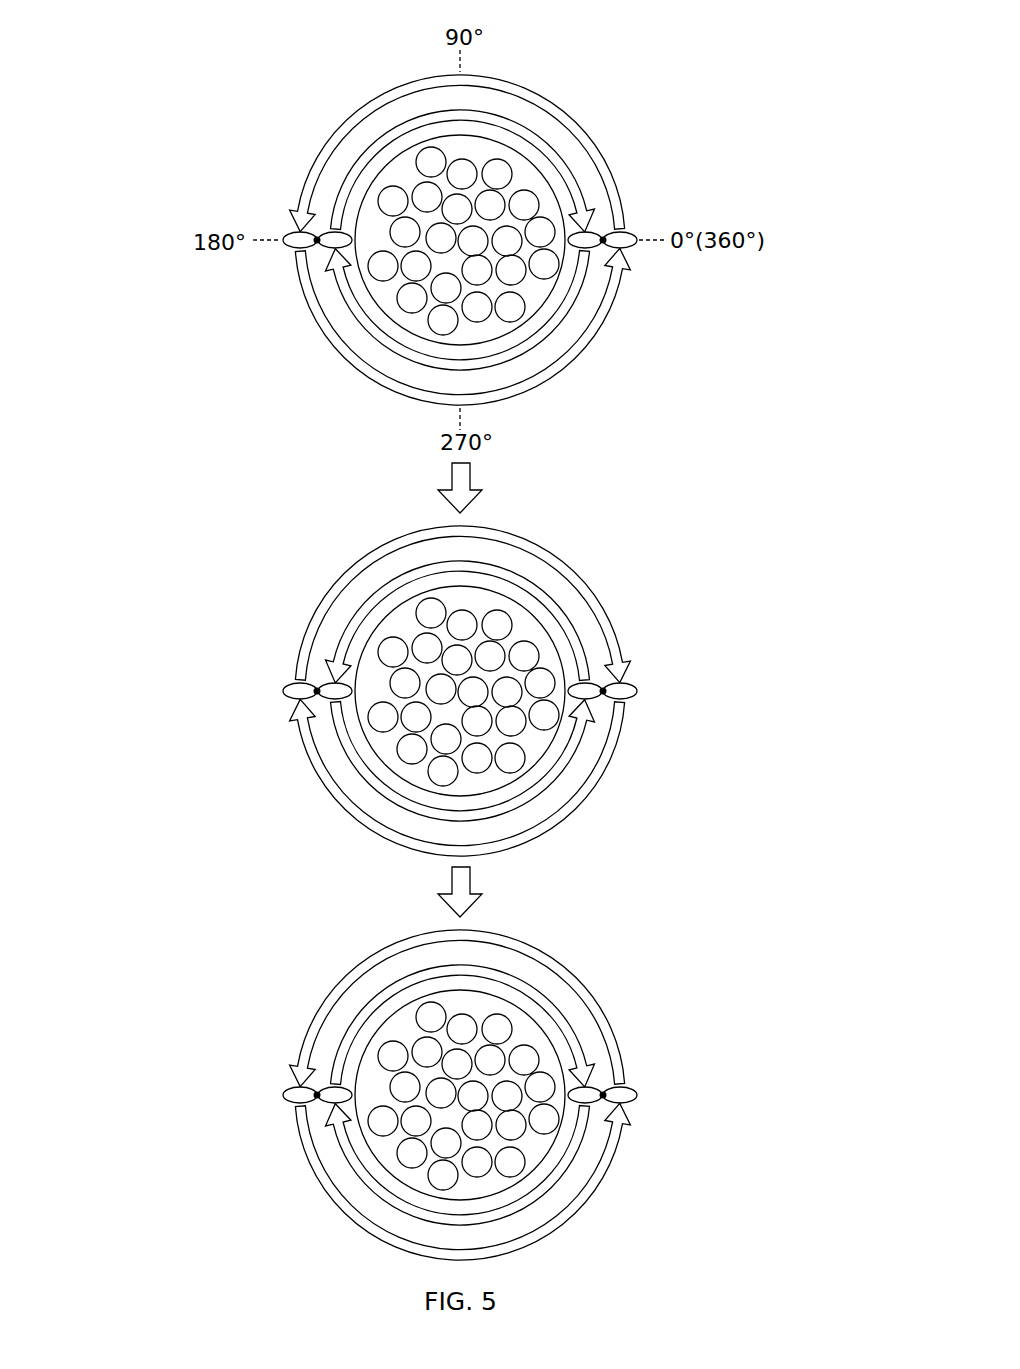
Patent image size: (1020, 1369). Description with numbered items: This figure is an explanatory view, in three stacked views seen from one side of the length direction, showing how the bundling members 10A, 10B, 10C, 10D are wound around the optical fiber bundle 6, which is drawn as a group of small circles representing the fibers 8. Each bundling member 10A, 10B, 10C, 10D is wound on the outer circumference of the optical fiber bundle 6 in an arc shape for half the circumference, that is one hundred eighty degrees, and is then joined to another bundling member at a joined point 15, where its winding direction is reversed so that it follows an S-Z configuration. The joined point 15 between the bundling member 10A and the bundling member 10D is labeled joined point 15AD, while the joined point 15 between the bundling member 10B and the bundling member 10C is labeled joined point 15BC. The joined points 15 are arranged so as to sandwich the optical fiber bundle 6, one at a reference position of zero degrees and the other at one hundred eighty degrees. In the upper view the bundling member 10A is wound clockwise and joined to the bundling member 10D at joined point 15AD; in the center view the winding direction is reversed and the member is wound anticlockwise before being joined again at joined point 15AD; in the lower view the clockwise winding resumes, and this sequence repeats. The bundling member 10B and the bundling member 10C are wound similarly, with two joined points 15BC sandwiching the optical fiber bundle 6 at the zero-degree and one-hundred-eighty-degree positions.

The optical fiber bundle 6 is at (516, 635).
The electric wire 8 is at (547, 230).
The bundling member 10A is at (612, 276).
The bundling member 10B is at (293, 235).
The bundling member 10C is at (333, 270).
The bundling member 10D is at (632, 233).
The joined point 15 is at (461, 686).
The joined point 15BC is at (317, 243).
The joined point 15AD is at (603, 243).